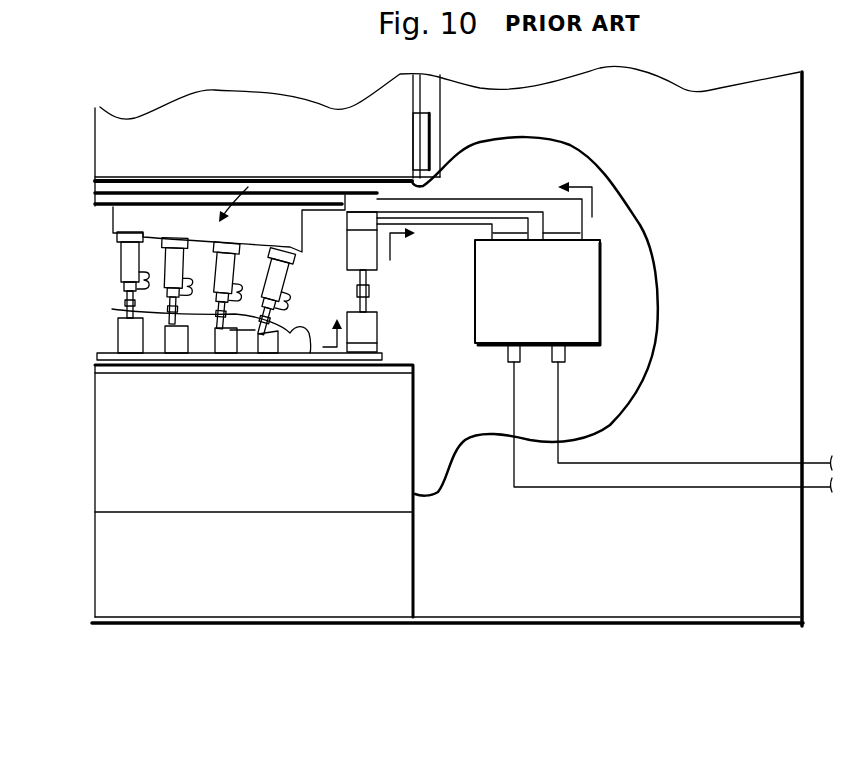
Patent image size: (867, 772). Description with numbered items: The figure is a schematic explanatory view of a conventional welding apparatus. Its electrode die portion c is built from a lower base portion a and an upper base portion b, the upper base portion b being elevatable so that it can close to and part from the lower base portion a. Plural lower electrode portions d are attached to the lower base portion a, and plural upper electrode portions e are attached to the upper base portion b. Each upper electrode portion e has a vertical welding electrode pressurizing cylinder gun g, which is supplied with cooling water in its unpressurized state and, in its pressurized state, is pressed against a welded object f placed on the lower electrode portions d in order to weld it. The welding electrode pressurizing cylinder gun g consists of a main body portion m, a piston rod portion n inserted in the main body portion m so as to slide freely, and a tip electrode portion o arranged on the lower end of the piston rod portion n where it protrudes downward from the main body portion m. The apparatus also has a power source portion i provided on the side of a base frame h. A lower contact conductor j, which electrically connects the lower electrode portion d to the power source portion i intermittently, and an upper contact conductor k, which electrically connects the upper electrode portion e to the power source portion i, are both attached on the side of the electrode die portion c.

The lower base portion a is at (120, 367).
The upper base portion b is at (112, 186).
The electrode die portion c is at (70, 182).
The lower electrode portions d is at (228, 348).
The upper electrode portions e is at (272, 222).
The welded object f is at (294, 329).
The welding electrode pressurizing cylinder gun g is at (232, 274).
The base frame h is at (523, 592).
The power source portion i is at (540, 307).
The lower contact conductor j is at (365, 309).
The upper contact conductor k is at (368, 291).
The main body portion m is at (122, 258).
The piston rod portion n is at (123, 292).
The tip electrode portion o is at (123, 308).